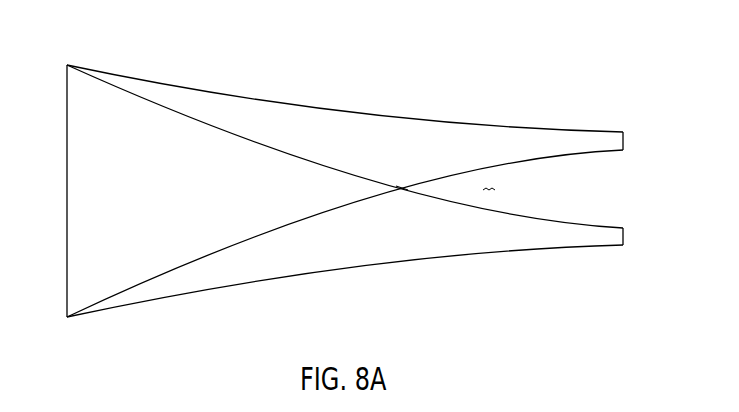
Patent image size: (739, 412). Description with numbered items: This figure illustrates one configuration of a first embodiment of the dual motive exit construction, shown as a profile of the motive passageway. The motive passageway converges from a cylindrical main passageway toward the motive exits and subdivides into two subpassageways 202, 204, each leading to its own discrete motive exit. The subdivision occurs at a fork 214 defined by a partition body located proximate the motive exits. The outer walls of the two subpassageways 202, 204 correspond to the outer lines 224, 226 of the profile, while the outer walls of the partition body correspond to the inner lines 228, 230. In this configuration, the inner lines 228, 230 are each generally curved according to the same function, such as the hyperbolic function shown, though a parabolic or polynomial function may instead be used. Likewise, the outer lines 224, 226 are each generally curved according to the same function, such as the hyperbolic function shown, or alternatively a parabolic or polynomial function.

The subpassageway 202 is at (345, 191).
The subpassageway 204 is at (345, 191).
The fork 214 is at (402, 187).
The outer line 224 is at (404, 282).
The outer line 226 is at (410, 118).
The inner line 228 is at (528, 221).
The inner line 230 is at (571, 169).